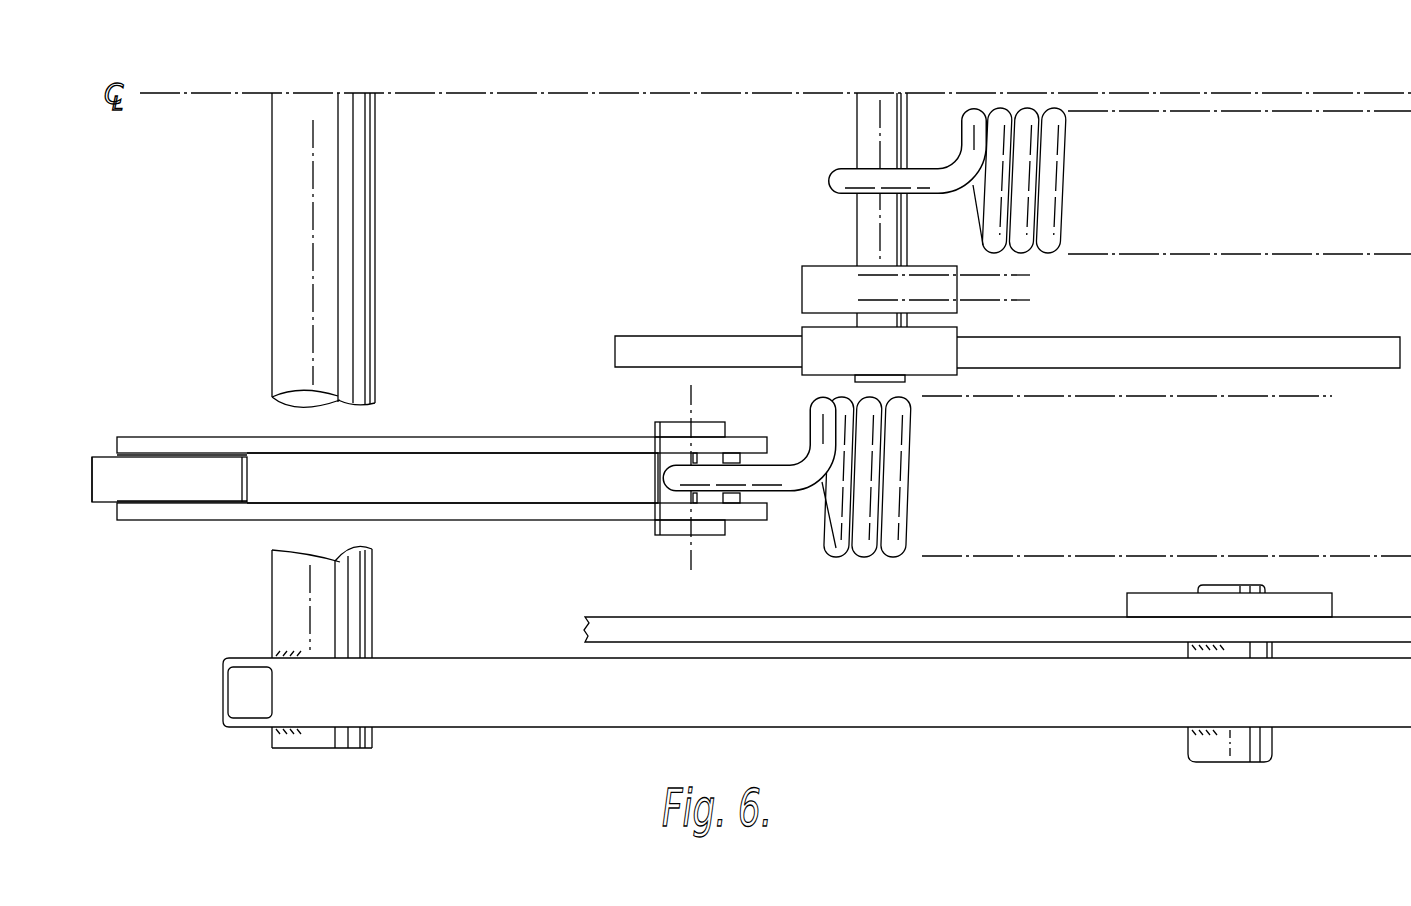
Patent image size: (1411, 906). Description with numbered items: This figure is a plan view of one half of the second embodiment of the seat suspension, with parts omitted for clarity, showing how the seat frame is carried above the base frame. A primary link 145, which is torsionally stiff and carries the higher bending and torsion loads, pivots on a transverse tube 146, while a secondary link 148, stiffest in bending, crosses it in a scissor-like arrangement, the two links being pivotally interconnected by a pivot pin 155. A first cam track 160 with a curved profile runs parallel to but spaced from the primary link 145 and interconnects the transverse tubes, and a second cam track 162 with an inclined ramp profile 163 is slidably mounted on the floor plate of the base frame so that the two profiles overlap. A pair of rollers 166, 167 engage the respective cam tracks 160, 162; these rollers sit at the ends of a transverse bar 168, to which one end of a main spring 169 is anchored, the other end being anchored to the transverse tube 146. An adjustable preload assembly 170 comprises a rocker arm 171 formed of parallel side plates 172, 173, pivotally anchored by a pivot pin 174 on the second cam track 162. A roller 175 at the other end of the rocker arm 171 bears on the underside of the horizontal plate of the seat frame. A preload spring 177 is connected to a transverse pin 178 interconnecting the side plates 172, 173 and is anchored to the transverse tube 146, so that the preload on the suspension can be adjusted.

The primary link 145 is at (540, 729).
The transverse tube 146 is at (380, 311).
The secondary link 148 is at (887, 634).
The pivot pin 155 is at (1276, 763).
The first cam track 160 is at (1034, 290).
The second cam track 162 is at (1197, 336).
The inclined ramp profile 163 is at (640, 346).
The roller 166 is at (800, 278).
The roller 167 is at (818, 345).
The transverse bar 168 is at (871, 102).
The main spring 169 is at (1031, 133).
The adjustable preload assembly 170 is at (185, 522).
The rocker arm 171 is at (400, 522).
The side plate 172 is at (485, 437).
The side plate 173 is at (583, 521).
The pivot pin 174 is at (688, 393).
The roller 175 is at (92, 455).
The preload spring 177 is at (843, 556).
The transverse pin 178 is at (733, 455).